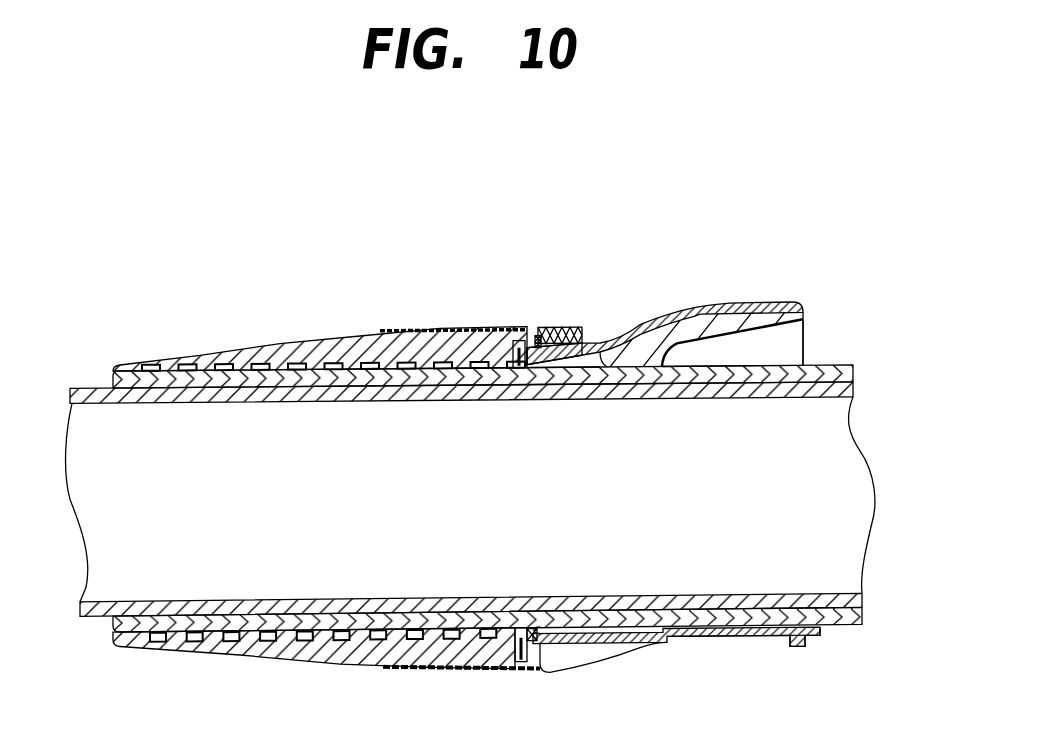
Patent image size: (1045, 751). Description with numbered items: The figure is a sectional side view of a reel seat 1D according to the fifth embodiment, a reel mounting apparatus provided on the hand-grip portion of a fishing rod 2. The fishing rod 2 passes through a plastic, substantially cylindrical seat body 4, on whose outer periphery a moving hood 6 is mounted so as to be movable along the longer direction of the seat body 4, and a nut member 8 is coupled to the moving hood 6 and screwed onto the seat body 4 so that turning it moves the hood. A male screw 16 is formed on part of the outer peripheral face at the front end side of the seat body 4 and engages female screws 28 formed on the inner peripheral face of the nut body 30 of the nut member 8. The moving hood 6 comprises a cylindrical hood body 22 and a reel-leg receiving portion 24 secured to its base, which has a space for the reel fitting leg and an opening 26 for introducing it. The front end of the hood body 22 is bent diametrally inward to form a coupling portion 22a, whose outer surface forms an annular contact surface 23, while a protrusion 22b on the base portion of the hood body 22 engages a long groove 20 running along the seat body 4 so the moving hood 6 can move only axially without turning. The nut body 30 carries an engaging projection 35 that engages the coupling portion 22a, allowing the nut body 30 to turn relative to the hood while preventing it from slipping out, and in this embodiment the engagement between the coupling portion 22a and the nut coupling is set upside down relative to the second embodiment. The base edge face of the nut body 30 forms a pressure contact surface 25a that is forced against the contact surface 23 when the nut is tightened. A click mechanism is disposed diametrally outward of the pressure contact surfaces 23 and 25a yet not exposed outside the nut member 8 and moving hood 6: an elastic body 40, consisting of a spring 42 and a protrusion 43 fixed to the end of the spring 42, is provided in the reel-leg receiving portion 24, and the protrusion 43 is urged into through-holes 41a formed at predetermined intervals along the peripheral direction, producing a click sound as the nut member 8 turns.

The reel seat 1D is at (667, 198).
The fishing rod 2 is at (803, 601).
The seat body 4 is at (845, 634).
The moving hood 6 is at (770, 300).
The nut member 8 is at (297, 330).
The male screw 16 is at (229, 634).
The long groove 20 is at (588, 640).
The hood body 22 is at (655, 327).
The coupling portion 22a is at (515, 372).
The protrusion 22b is at (733, 644).
The contact surface 23 is at (512, 362).
The reel-leg receiving portion 24 is at (705, 311).
The pressure contact surface 25a is at (522, 672).
The opening 26 is at (793, 354).
The female screws 28 is at (218, 360).
The nut body 30 is at (266, 351).
The engaging projection 35 is at (534, 372).
The elastic body 40 is at (643, 264).
The through-holes 41a is at (517, 345).
The spring 42 is at (574, 333).
The protrusion 43 is at (540, 340).